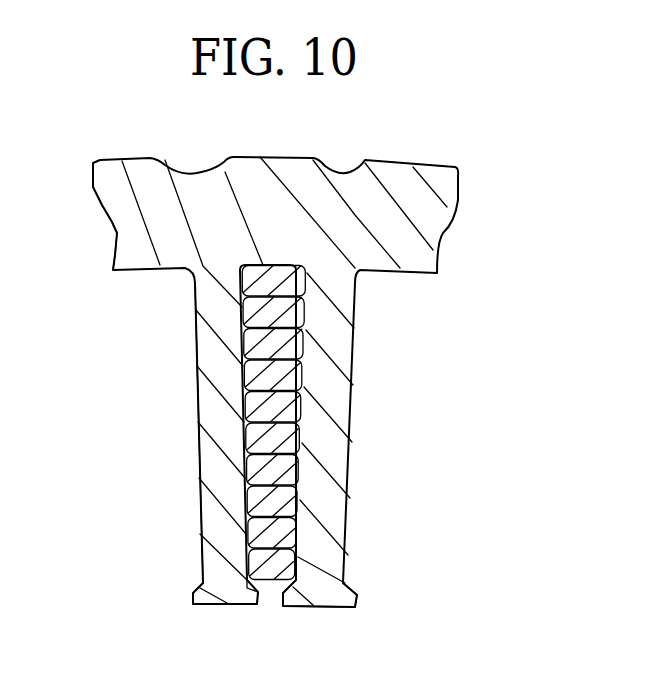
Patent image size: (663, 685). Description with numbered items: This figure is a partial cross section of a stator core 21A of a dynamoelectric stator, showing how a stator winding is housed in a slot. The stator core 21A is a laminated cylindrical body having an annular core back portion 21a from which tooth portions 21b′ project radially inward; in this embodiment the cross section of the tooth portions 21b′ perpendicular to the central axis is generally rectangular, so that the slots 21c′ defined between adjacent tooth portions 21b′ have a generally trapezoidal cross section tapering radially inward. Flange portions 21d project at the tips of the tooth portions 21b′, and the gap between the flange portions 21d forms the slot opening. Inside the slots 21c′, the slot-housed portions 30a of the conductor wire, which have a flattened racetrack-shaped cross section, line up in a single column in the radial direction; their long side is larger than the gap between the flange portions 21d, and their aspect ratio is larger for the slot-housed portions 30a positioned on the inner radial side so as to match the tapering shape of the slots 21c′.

The stator core 21A is at (315, 382).
The annular core back portion 21a is at (78, 216).
The tooth portions 21b′ is at (159, 433).
The slots 21c′ is at (366, 425).
The flange portions 21d is at (237, 613).
The slot-housed portions 30a is at (210, 423).